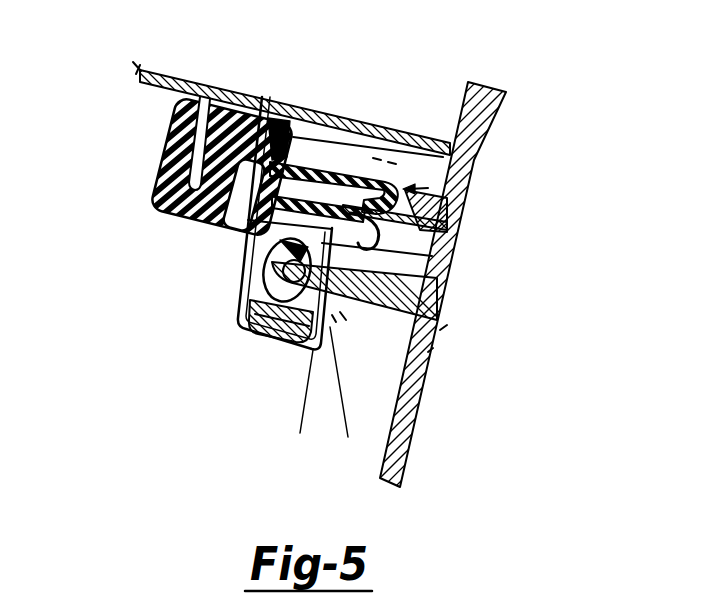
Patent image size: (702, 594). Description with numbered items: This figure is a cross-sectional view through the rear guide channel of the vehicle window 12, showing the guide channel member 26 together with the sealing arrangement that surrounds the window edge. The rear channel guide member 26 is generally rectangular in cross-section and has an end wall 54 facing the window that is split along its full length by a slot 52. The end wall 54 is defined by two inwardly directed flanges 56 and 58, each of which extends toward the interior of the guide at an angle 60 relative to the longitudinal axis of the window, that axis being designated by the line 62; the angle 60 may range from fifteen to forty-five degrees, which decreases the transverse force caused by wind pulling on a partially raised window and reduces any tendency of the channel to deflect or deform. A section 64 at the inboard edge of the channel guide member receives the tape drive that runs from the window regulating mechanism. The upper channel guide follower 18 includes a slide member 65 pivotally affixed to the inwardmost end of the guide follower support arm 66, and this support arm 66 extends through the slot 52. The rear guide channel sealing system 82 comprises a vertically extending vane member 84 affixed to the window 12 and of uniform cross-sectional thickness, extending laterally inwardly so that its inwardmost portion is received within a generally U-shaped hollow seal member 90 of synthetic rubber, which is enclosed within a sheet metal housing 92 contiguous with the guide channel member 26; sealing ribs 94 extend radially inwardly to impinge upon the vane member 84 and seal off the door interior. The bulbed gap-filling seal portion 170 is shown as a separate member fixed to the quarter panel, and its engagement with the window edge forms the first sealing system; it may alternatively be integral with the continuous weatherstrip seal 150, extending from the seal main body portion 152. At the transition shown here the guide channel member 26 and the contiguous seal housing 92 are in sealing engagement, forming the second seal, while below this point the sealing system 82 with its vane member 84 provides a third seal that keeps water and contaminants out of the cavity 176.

The door panel 12 is at (407, 440).
The weatherstrip seal 150 is at (163, 147).
The main body portion 152 is at (220, 93).
The sheet metal housing 92 is at (318, 160).
The hollow seal member 90 is at (364, 165).
The cavity 176 is at (405, 173).
The bulbed gap-filling seal portion 170 is at (458, 176).
The rear guide channel sealing system 82 is at (470, 190).
The sealing ribs 94 is at (470, 203).
The vane member 84 is at (463, 240).
The inwardly directed flange 58 is at (450, 261).
The upper channel guide follower 18 is at (258, 240).
The rear channel guide member 26 is at (232, 288).
The section 64 is at (247, 327).
The slide member 65 is at (257, 333).
The line 62 is at (303, 377).
The angle 60 is at (354, 428).
The inwardly directed flange 56 is at (340, 312).
The end wall 54 is at (332, 315).
The guide follower support arm 66 is at (447, 325).
The slot 52 is at (433, 348).